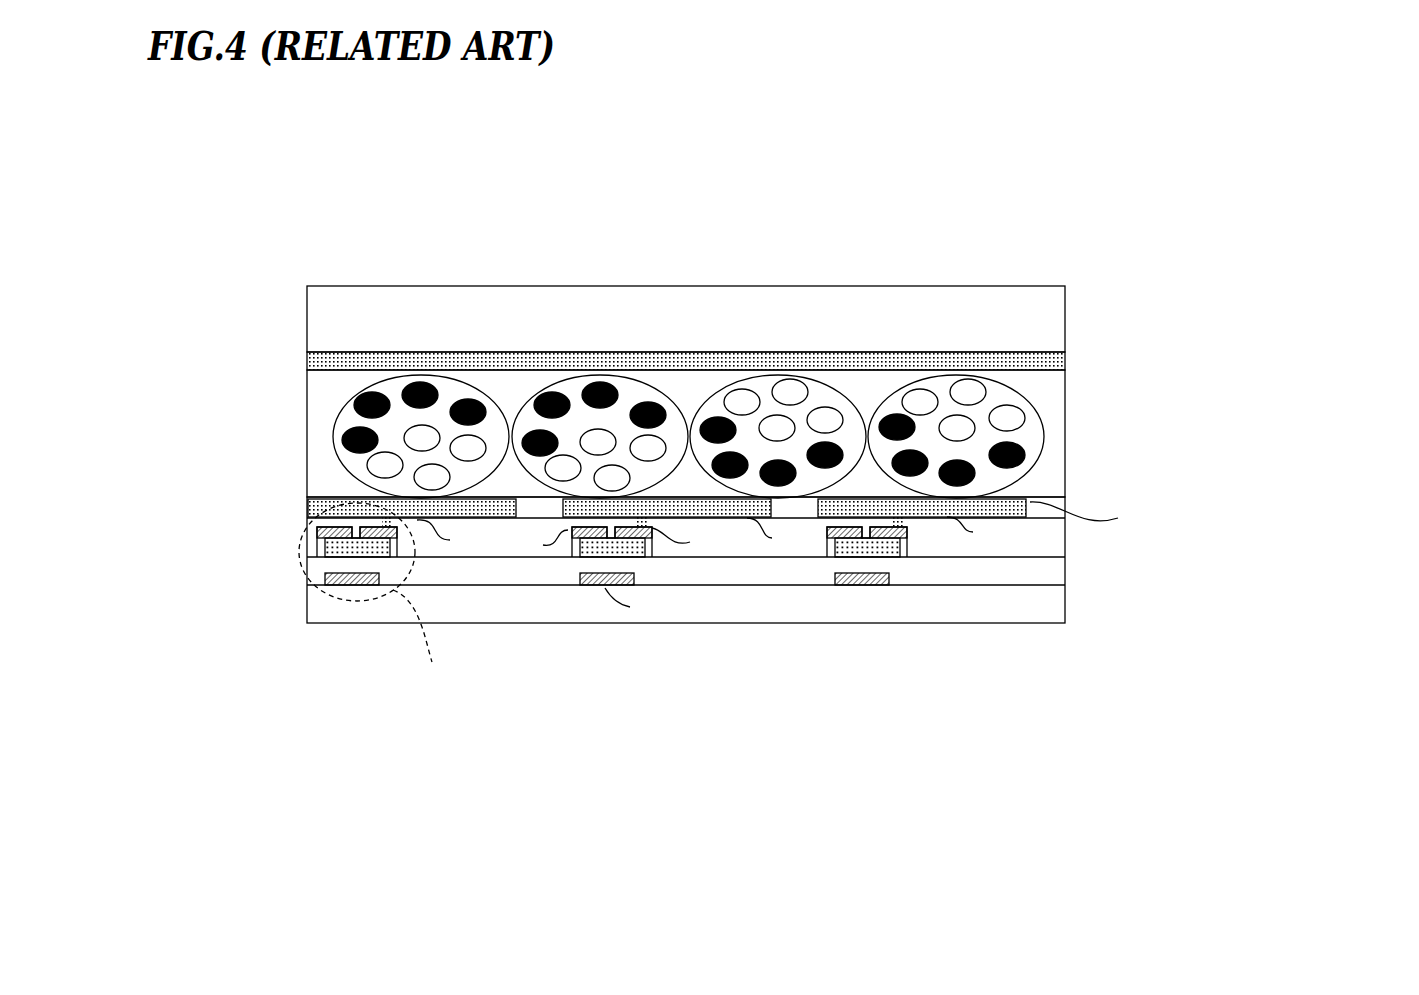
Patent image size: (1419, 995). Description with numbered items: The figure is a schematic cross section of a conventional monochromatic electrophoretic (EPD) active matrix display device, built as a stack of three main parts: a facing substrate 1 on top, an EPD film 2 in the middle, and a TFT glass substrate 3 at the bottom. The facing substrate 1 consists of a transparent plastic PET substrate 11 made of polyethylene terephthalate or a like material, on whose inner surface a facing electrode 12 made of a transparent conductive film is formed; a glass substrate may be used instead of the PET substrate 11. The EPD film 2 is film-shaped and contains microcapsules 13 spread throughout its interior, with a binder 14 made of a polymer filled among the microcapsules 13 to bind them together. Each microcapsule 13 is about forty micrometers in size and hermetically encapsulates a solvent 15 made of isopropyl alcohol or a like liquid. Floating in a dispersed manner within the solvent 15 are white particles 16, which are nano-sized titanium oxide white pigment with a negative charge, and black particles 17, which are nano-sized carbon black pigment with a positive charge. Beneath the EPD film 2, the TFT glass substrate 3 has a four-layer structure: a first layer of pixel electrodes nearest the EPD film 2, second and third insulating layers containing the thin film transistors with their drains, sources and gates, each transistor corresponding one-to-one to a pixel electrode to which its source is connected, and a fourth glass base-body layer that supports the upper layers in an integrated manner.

The facing substrate 1 is at (767, 327).
The PET substrate 11 is at (1065, 318).
The facing electrode 12 is at (1065, 360).
The EPD film 2 is at (753, 467).
The binder 14 is at (335, 388).
The microcapsule 13 is at (753, 469).
The solvent 15 is at (1030, 442).
The white particle 16 is at (1015, 408).
The black particle 17 is at (1022, 462).
The TFT glass substrate 3 is at (293, 520).